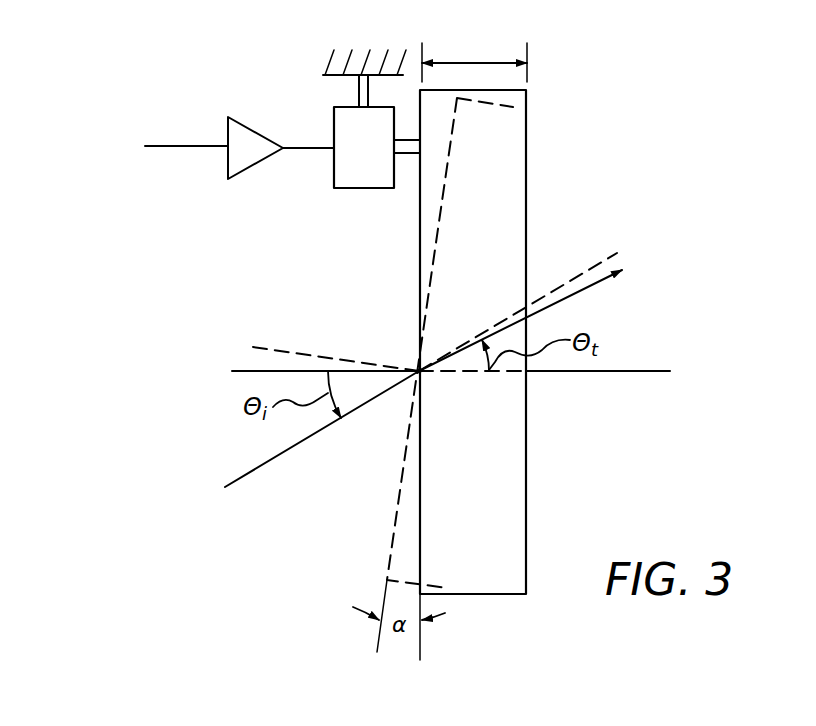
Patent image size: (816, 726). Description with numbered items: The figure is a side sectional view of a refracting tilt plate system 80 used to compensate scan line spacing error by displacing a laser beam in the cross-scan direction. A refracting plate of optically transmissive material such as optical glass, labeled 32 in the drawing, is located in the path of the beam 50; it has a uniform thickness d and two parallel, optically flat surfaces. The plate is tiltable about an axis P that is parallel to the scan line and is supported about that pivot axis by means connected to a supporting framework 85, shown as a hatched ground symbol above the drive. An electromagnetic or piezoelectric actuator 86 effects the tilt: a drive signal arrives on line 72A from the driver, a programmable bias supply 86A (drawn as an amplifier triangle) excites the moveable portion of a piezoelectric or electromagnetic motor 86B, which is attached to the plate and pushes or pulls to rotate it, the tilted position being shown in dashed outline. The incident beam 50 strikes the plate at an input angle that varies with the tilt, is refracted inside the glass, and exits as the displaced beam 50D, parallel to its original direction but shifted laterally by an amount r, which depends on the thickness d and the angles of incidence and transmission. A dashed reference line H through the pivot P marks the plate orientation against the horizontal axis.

The line 72A is at (170, 146).
The programmable bias supply 86A is at (252, 127).
The actuator 86 is at (200, 188).
The supporting framework 85 is at (332, 92).
The motor 86B is at (360, 188).
The tiltable transparent plate 32 is at (527, 143).
The refracting tilt plate system 80 is at (680, 113).
The beam 50 is at (262, 463).
The displaced beam 50D is at (604, 280).
The lateral displacement r is at (617, 247).
The reference line through tilted plate H is at (243, 366).
The axis P is at (407, 355).
The thickness d is at (460, 63).